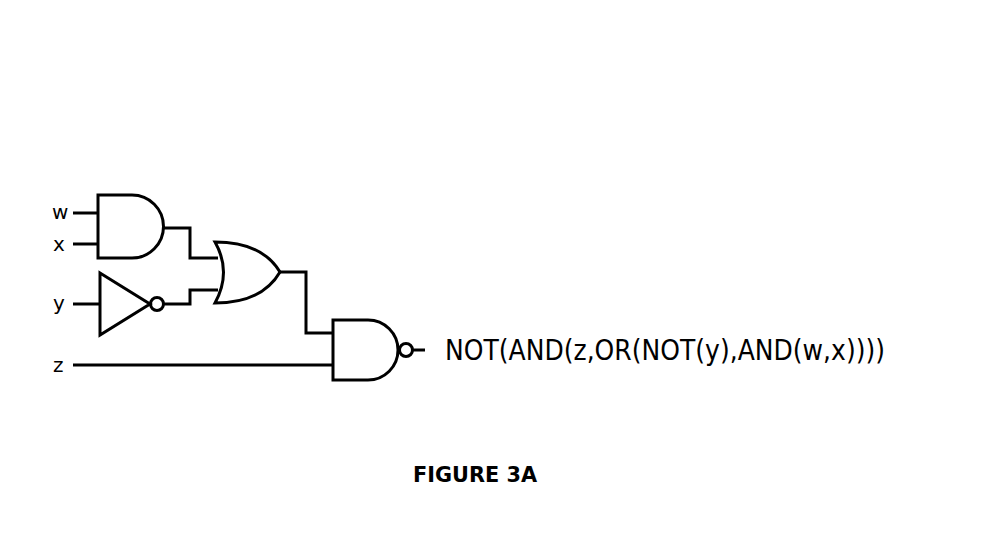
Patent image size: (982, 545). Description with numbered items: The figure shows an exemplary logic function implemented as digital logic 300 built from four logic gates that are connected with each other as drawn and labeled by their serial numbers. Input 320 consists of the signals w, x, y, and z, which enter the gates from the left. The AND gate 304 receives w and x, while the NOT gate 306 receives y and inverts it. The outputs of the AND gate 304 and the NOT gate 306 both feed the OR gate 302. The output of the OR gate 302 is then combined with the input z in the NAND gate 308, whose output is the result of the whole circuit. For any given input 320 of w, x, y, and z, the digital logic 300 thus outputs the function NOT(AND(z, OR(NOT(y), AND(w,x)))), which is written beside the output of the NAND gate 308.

The digital logic 300 is at (448, 94).
The input 320 is at (63, 194).
The AND gate 304 is at (158, 203).
The NOT gate 306 is at (130, 322).
The OR gate 302 is at (257, 245).
The NAND gate 308 is at (373, 315).